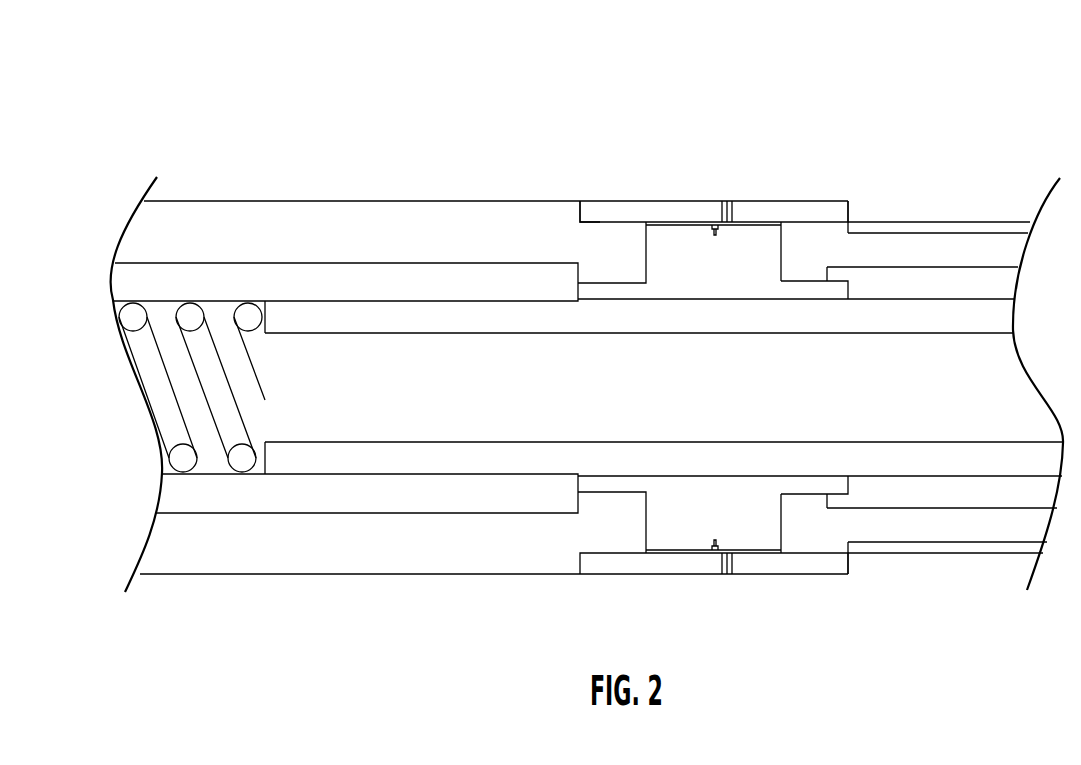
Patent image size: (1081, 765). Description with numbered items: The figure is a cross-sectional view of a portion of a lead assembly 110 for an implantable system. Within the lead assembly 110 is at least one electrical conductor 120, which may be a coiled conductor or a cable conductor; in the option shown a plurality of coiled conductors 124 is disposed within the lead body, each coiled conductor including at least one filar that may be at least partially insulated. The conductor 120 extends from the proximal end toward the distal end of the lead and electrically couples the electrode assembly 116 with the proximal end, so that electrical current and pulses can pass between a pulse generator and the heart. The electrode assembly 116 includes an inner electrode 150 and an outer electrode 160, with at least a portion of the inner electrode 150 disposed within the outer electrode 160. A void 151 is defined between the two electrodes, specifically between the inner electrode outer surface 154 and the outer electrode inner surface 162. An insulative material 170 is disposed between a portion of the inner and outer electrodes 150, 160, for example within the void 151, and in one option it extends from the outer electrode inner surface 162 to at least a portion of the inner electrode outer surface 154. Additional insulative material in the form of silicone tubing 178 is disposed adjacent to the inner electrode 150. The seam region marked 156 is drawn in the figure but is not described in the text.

The lead assembly 110 is at (765, 47).
The electrode assembly 116 is at (762, 533).
The electrical conductor 120 is at (305, 262).
The coiled conductors 124 is at (238, 272).
The inner electrode 150 is at (748, 258).
The void 151 is at (818, 235).
The inner electrode outer surface 154 is at (805, 277).
The seam 156 is at (748, 240).
The outer electrode 160 is at (613, 208).
The outer electrode inner surface 162 is at (595, 222).
The insulative material 170 is at (487, 548).
The tubing 178 is at (236, 503).